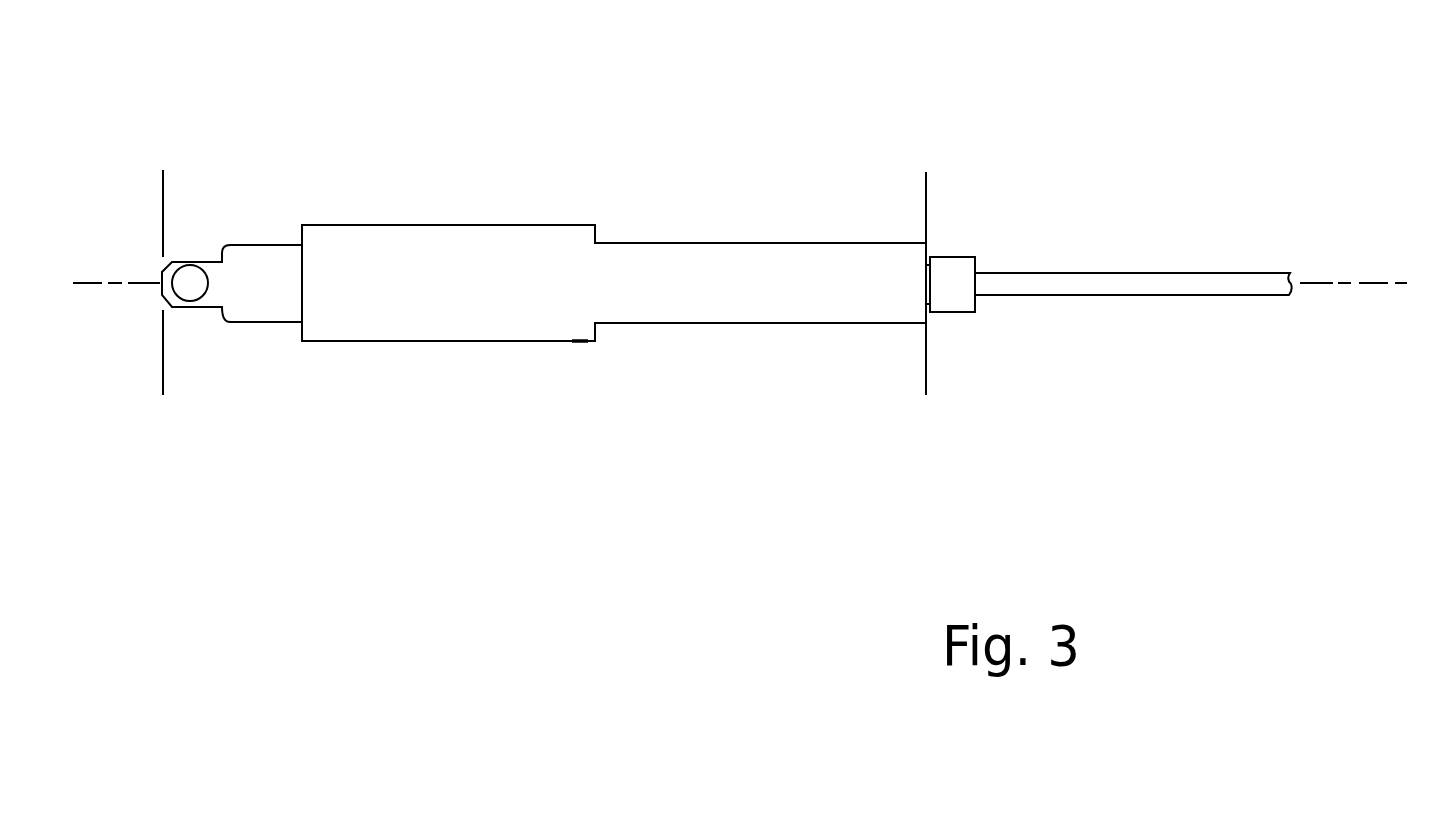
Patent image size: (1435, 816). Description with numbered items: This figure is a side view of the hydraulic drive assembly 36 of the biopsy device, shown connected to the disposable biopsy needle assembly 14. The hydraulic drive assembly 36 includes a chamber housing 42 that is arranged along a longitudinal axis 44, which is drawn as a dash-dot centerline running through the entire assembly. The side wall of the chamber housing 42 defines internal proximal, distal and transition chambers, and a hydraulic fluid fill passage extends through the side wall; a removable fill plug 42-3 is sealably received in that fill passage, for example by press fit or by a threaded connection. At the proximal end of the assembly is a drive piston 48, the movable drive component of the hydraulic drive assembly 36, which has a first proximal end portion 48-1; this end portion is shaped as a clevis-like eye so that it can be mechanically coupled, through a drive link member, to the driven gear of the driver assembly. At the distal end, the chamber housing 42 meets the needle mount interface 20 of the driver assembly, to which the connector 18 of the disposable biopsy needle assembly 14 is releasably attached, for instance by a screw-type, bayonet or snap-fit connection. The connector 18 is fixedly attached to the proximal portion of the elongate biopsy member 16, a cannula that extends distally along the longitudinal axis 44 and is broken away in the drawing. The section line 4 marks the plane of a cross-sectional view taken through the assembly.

The section line 4- 4 is at (170, 175).
The disposable biopsy needle assembly 14 is at (1109, 203).
The elongate biopsy member 16 is at (1212, 273).
The connector 18 is at (958, 257).
The needle mount interface 20 is at (928, 280).
The hydraulic drive assembly 36 is at (866, 138).
The chamber housing 42 is at (614, 283).
The removable fill plug 42-3 is at (583, 343).
The longitudinal axis 44 is at (1362, 283).
The drive piston 48 is at (237, 226).
The first proximal end portion 48-1 is at (198, 238).